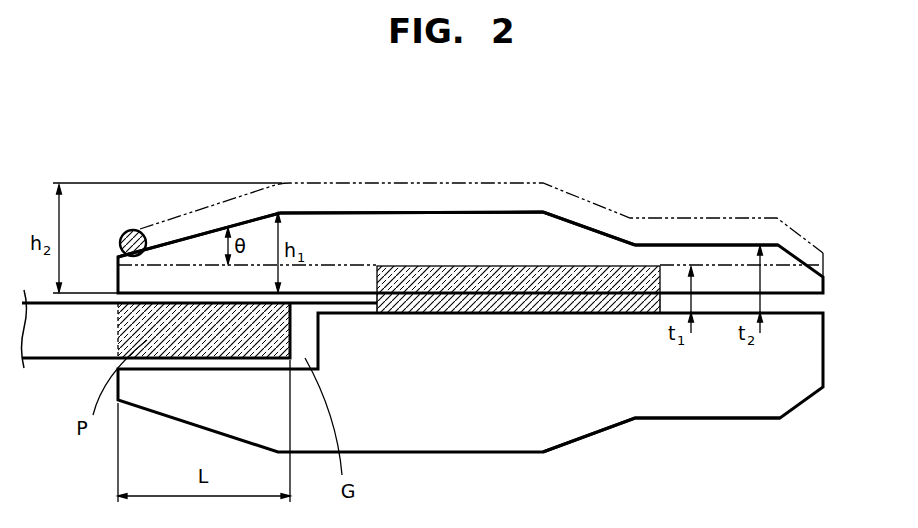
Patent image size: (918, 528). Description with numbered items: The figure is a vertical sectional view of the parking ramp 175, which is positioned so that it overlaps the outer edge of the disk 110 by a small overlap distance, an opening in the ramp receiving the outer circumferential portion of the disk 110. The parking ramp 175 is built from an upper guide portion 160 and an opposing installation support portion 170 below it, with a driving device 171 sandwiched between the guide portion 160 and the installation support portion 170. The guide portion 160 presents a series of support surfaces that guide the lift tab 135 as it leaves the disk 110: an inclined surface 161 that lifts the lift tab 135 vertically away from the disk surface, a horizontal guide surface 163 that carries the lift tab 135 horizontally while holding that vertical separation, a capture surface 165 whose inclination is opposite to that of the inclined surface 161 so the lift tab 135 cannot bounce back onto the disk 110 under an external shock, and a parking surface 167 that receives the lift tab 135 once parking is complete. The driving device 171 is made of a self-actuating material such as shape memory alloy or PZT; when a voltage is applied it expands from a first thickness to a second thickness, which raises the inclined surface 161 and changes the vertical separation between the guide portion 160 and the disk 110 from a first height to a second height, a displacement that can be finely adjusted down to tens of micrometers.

The disk 110 is at (40, 355).
The lift tab 135 is at (133, 230).
The upper guide portion 160 is at (471, 252).
The inclined surface 161 is at (205, 230).
The horizontal guide surface 163 is at (413, 212).
The capture surface 165 is at (592, 230).
The parking surface 167 is at (707, 243).
The installation support portion 170 is at (471, 368).
The driving device 171 is at (511, 305).
The parking ramp 175 is at (685, 438).